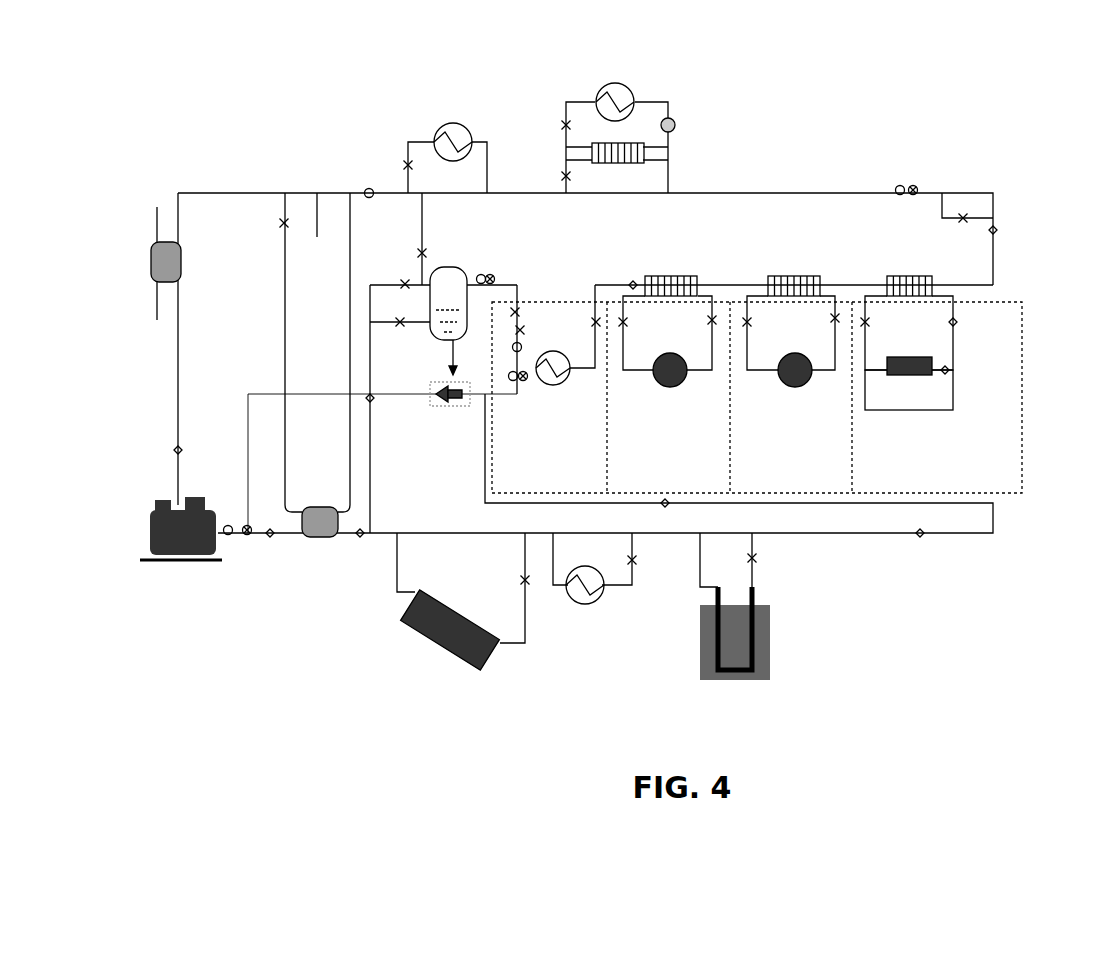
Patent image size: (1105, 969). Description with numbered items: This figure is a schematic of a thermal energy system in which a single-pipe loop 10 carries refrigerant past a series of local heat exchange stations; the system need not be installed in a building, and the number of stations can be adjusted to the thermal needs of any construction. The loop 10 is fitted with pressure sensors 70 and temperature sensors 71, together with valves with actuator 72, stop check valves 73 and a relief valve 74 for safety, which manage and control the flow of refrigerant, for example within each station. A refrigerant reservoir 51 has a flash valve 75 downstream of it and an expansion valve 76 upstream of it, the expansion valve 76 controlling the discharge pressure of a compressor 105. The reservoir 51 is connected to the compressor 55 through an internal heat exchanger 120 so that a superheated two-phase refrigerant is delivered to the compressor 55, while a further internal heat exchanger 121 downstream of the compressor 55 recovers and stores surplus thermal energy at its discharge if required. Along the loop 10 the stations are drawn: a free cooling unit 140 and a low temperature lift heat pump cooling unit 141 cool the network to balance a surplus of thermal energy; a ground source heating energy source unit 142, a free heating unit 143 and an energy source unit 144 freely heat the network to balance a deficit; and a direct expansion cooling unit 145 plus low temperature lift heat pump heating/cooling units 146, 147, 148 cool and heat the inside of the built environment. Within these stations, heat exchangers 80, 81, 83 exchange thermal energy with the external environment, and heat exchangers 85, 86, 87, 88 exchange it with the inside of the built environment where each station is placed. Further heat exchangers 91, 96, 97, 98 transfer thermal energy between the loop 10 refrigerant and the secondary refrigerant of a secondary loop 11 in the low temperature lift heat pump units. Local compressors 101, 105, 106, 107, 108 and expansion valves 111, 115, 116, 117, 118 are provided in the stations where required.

The single-pipe loop 10 is at (258, 193).
The secondary loop 11 is at (708, 293).
The refrigerant reservoir 51 is at (448, 321).
The compressor 55 is at (147, 533).
The pressure sensor 70 is at (521, 326).
The temperature sensor 71 is at (373, 196).
The valve with actuator 72 is at (288, 227).
The stop check valve 73 is at (402, 162).
The relief valve 74 is at (418, 251).
The flash valve 75 is at (401, 285).
The expansion valve 76 is at (511, 315).
The heat exchanger 80 is at (463, 125).
The heat exchanger 81 is at (600, 86).
The heat exchanger 83 is at (583, 606).
The heat exchanger 85 is at (553, 386).
The heat exchanger 86 is at (660, 386).
The heat exchanger 87 is at (787, 386).
The heat exchanger 88 is at (905, 378).
The heat exchanger 91 is at (645, 153).
The heat exchanger 96 is at (660, 277).
The heat exchanger 97 is at (795, 277).
The heat exchanger 98 is at (898, 277).
The local compressor 101 is at (677, 125).
The local compressor 105 is at (517, 378).
The local compressor 106 is at (707, 320).
The local compressor 107 is at (751, 323).
The local compressor 108 is at (868, 324).
The expansion valve 111 is at (560, 124).
The expansion valve 115 is at (594, 319).
The expansion valve 116 is at (622, 332).
The expansion valve 117 is at (837, 326).
The expansion valve 118 is at (958, 322).
The internal heat exchanger 120 is at (322, 507).
The internal heat exchanger 121 is at (150, 263).
The free cooling unit 140 is at (413, 128).
The low temperature lift heat pump cooling unit 141 is at (668, 87).
The ground source heating energy source unit 142 is at (770, 650).
The free heating unit 143 is at (625, 601).
The energy source unit 144 is at (420, 625).
The direct expansion cooling unit 145 is at (583, 386).
The low temperature lift heat pump heating/cooling unit 146 is at (698, 386).
The low temperature lift heat pump heating/cooling unit 147 is at (818, 399).
The low temperature lift heat pump heating/cooling unit 148 is at (968, 373).